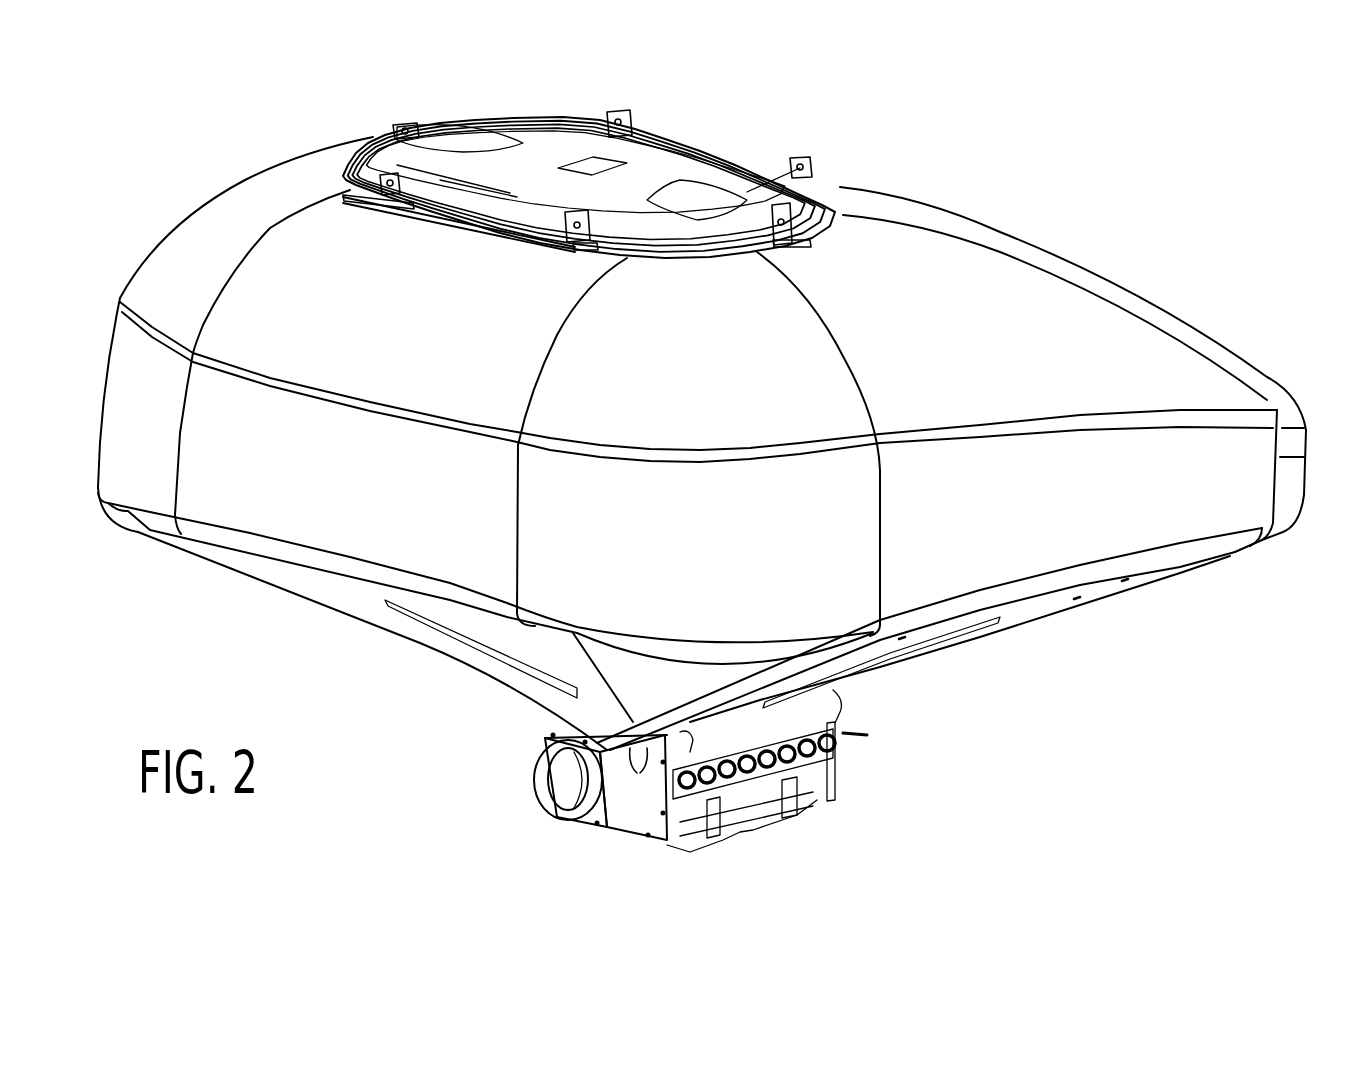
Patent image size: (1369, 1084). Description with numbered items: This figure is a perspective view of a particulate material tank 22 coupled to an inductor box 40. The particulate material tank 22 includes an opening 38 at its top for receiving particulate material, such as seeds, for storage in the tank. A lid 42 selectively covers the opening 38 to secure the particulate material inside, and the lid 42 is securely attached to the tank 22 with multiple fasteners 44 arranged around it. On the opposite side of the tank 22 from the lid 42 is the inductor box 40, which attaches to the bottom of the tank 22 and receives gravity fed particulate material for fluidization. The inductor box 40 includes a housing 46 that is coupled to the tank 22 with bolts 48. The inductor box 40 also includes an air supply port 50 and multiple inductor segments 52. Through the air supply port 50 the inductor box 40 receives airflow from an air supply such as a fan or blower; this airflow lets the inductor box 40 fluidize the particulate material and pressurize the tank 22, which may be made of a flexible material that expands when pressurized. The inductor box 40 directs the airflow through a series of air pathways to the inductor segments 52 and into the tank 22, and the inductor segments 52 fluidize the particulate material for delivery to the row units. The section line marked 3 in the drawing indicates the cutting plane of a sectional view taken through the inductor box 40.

The particulate material tank 22 is at (1012, 183).
The opening 38 is at (682, 260).
The inductor box 40 is at (642, 858).
The lid 42 is at (542, 150).
The fasteners 44 is at (600, 195).
The housing 46 is at (627, 818).
The bolts 48 is at (637, 758).
The air supply port 50 is at (542, 785).
The inductor segments 52 is at (738, 787).
The section line 3- 3 is at (550, 712).